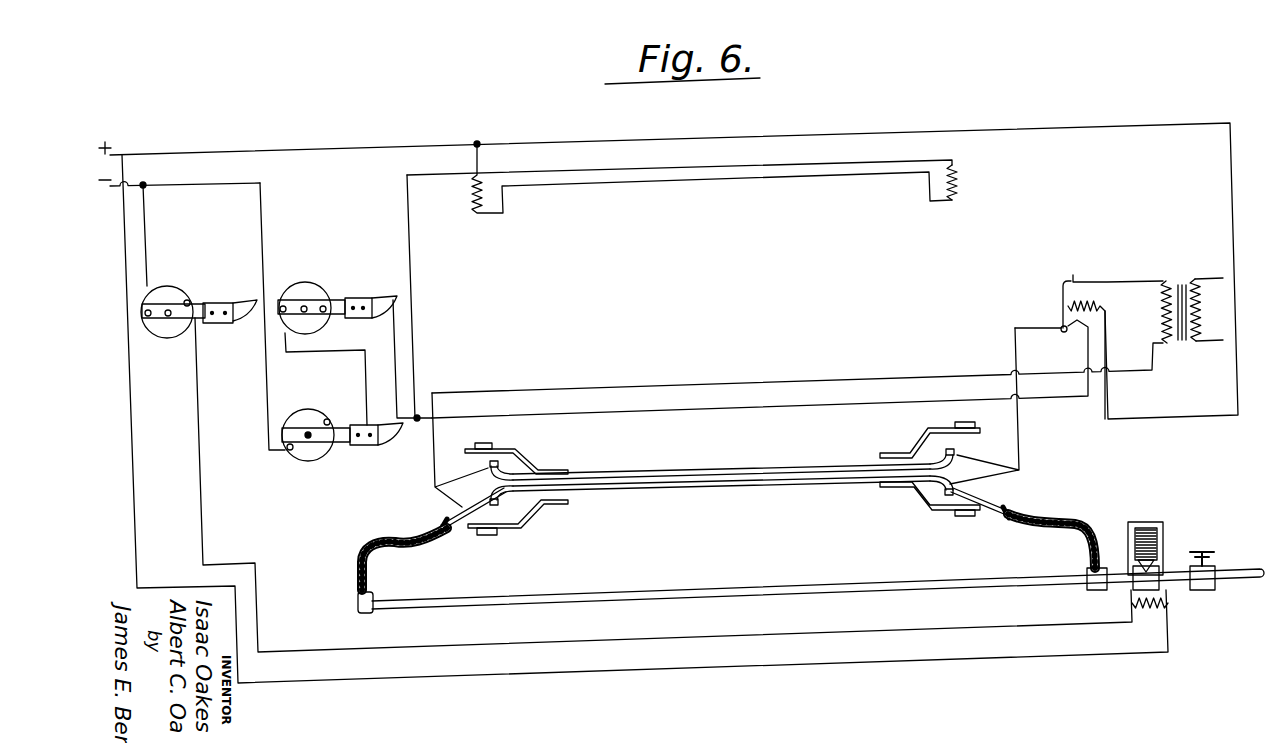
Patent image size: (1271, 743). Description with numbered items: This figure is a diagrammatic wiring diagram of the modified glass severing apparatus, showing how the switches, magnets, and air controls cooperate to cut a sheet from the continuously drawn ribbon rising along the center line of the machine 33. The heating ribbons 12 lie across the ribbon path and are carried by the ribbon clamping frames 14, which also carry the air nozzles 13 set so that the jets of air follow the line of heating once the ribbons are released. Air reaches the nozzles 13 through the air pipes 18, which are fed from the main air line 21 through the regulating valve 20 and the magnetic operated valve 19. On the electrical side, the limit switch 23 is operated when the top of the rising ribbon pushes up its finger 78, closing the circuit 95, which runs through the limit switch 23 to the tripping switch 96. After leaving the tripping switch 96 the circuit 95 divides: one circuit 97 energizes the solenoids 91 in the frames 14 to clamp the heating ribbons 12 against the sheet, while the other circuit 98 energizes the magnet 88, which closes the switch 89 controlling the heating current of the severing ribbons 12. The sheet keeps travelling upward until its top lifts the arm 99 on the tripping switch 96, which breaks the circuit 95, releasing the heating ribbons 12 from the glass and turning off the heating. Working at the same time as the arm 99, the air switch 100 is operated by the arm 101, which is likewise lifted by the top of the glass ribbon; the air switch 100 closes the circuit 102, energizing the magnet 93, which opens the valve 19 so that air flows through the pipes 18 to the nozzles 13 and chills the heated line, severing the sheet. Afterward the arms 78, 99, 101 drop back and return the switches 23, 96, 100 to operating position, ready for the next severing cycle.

The heating ribbons 12 is at (631, 457).
The air nozzles 13 is at (448, 518).
The ribbon clamping frames 14 is at (487, 447).
The air pipes 18 is at (362, 561).
The magnetic operated valve 19 is at (1150, 536).
The regulating valve 20 is at (1202, 552).
The main air line 21 is at (1232, 572).
The limit switch 23 is at (292, 458).
The center line of the machine 33 is at (784, 473).
The finger 78 is at (390, 448).
The magnet 88 is at (1095, 301).
The switch 89 is at (1068, 280).
The solenoids 91 is at (471, 204).
The magnet 93 is at (1152, 607).
The circuit 95 is at (265, 386).
The tripping switch 96 is at (306, 290).
The circuit 97 is at (413, 346).
The circuit 98 is at (737, 409).
The arm 99 is at (370, 299).
The air switch 100 is at (181, 268).
The arm 101 is at (228, 302).
The circuit 102 is at (192, 419).